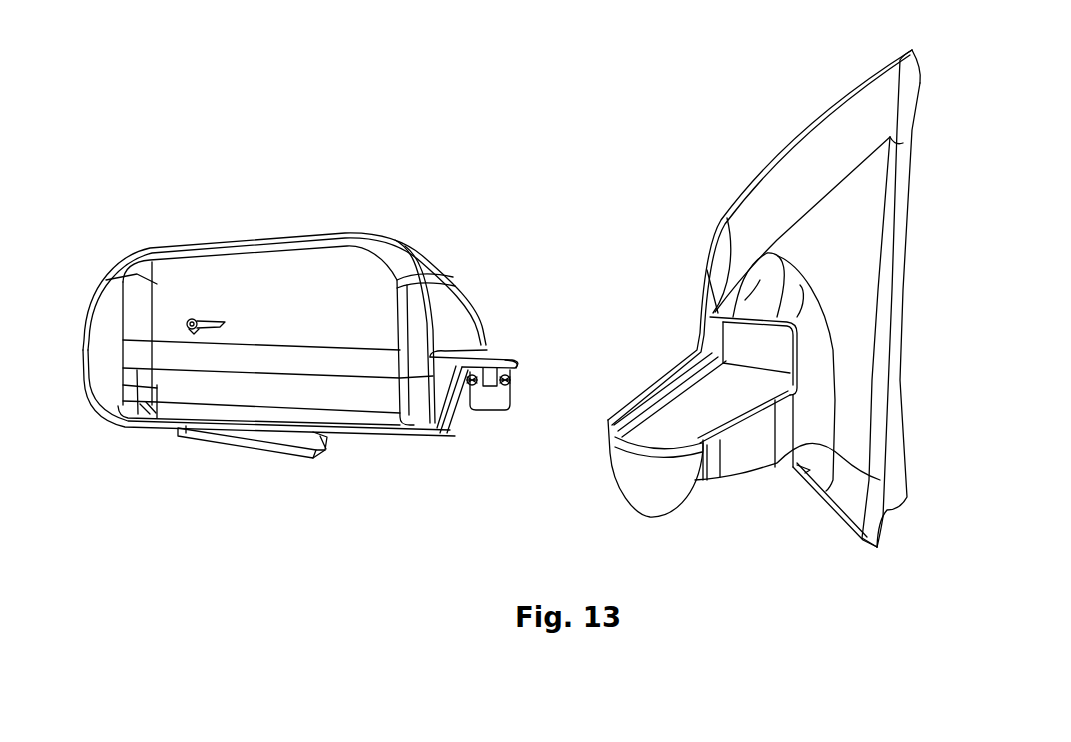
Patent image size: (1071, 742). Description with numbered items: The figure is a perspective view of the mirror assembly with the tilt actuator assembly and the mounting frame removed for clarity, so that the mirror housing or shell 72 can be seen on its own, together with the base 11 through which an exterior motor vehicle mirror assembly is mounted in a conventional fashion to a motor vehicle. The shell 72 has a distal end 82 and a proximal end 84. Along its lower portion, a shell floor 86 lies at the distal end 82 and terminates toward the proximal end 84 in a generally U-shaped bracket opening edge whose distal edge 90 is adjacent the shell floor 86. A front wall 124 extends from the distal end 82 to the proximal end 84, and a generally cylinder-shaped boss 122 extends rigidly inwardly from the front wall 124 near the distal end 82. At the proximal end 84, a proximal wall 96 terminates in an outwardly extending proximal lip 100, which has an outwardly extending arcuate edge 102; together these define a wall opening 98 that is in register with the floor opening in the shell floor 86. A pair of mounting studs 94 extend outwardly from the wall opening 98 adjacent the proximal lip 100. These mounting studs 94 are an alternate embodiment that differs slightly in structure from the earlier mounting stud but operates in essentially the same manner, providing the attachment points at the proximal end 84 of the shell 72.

The base 11 is at (831, 104).
The mirror housing or shell 72 is at (278, 235).
The distal end 82 is at (103, 372).
The proximal end 84 is at (462, 327).
The shell floor 86 is at (243, 412).
The distal edge 90 is at (320, 441).
The mounting studs 94 is at (510, 380).
The proximal wall 96 is at (423, 287).
The wall opening 98 is at (490, 389).
The proximal lip 100 is at (483, 360).
The arcuate edge 102 is at (513, 362).
The boss 122 is at (197, 314).
The front wall 124 is at (317, 300).